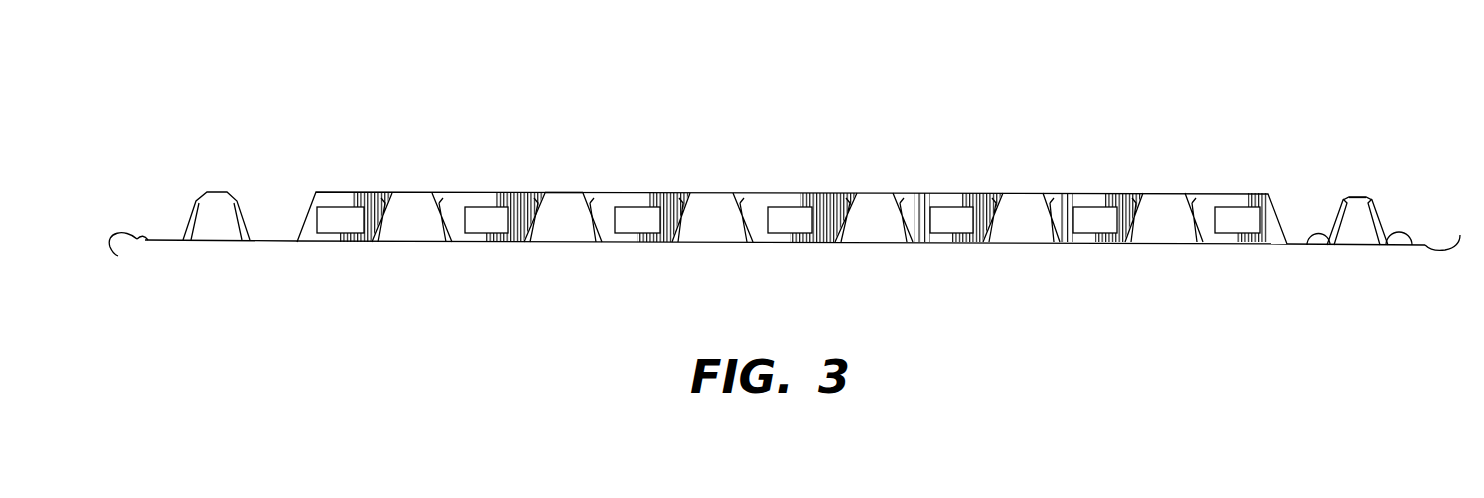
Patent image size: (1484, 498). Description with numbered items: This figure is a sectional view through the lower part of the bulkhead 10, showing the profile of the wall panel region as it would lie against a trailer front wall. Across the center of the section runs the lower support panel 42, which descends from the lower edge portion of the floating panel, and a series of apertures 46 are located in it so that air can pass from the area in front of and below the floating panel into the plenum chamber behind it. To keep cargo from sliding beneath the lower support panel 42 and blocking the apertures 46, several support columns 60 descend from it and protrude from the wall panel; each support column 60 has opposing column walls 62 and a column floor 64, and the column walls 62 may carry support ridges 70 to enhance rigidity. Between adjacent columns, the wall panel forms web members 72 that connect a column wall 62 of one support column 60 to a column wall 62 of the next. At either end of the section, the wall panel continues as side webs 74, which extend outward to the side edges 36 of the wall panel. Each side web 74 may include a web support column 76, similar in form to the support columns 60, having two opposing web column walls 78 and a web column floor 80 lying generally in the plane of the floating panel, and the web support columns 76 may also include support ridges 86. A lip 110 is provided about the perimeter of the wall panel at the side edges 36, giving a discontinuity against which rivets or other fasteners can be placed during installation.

The bulkhead 10 is at (443, 118).
The side edges 36 is at (794, 250).
The lower support panel 42 is at (918, 207).
The apertures 46 is at (967, 207).
The support columns 60 is at (561, 178).
The column walls 62 is at (533, 200).
The column floor 64 is at (562, 192).
The support ridges 70 is at (511, 232).
The web members 72 is at (767, 243).
The side webs 74 is at (271, 243).
The web support columns 76 is at (1341, 183).
The web column walls 78 is at (1333, 212).
The web column floor 80 is at (1364, 197).
The support ridges 86 is at (1317, 250).
The lip 110 is at (141, 236).